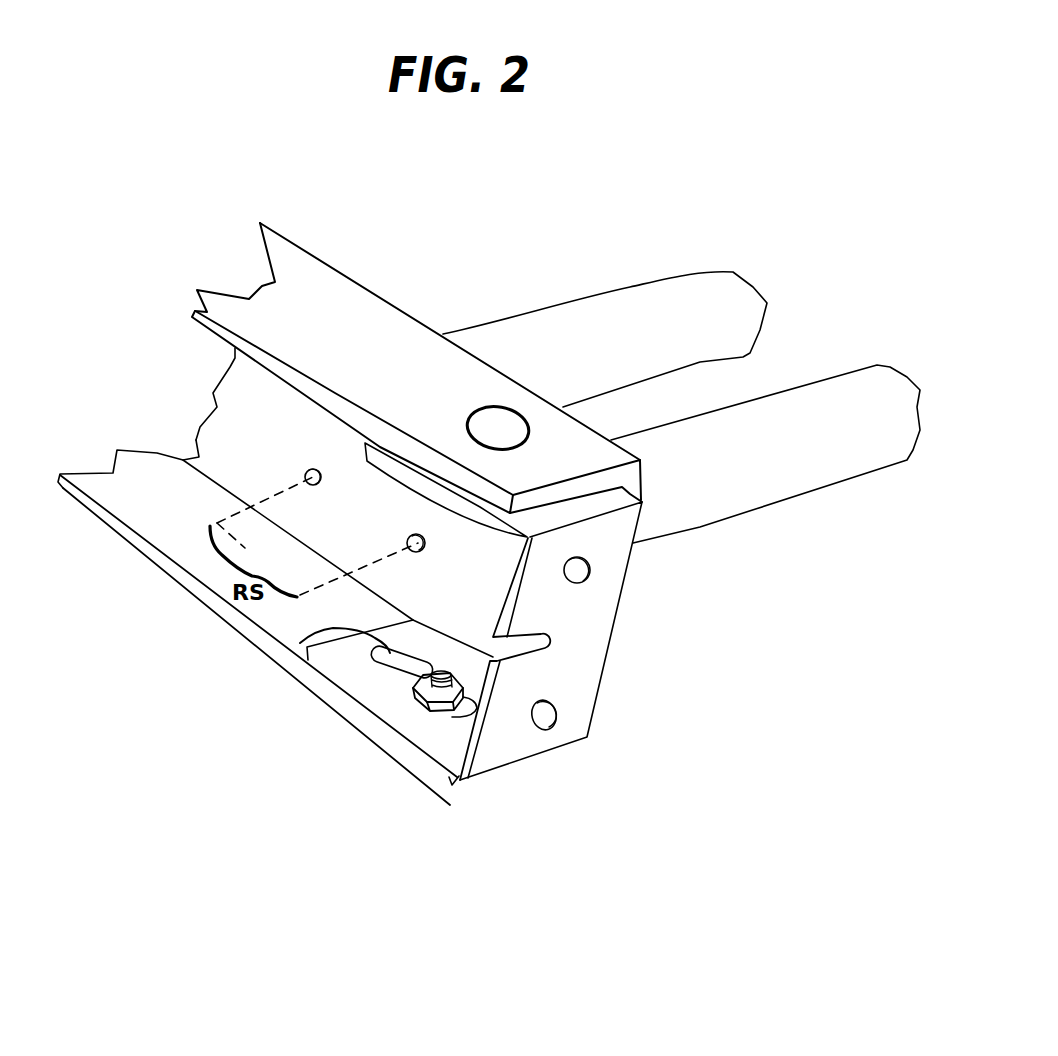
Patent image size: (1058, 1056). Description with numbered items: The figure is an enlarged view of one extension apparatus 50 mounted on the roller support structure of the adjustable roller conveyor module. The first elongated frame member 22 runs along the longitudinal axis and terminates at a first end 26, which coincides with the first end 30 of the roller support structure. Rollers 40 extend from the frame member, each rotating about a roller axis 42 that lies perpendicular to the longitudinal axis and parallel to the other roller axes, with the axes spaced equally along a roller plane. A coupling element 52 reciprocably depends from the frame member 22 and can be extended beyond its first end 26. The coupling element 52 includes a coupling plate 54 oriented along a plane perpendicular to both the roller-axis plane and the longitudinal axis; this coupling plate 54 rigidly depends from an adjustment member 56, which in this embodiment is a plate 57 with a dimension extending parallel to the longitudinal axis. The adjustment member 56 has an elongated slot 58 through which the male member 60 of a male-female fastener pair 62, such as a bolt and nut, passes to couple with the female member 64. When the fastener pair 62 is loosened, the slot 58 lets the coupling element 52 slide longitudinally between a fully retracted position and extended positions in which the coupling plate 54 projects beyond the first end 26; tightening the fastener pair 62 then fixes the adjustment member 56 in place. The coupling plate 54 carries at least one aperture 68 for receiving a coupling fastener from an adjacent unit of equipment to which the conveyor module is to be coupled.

The first elongated frame member 22 is at (197, 560).
The first end 26 is at (556, 400).
The first end of the roller support structure 30 is at (590, 482).
The roller 40 is at (727, 429).
The roller axis 42 is at (375, 562).
The extension apparatus 50 is at (453, 691).
The coupling element 52 is at (460, 738).
The coupling plate 54 is at (587, 611).
The adjustment member 56 is at (295, 723).
The plate 57 is at (367, 677).
The elongated slot 58 is at (340, 630).
The male member 60 is at (430, 672).
The male-female fastener pair 62 is at (363, 805).
The female member 64 is at (449, 714).
The aperture 68 is at (588, 581).